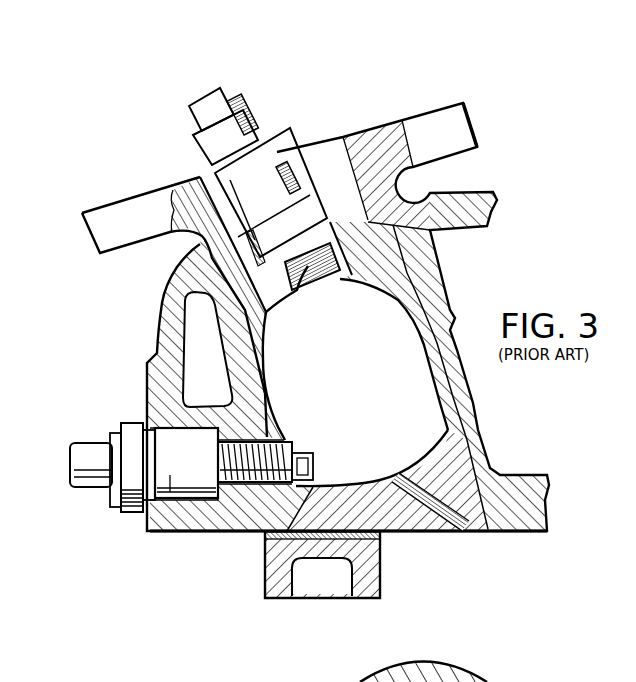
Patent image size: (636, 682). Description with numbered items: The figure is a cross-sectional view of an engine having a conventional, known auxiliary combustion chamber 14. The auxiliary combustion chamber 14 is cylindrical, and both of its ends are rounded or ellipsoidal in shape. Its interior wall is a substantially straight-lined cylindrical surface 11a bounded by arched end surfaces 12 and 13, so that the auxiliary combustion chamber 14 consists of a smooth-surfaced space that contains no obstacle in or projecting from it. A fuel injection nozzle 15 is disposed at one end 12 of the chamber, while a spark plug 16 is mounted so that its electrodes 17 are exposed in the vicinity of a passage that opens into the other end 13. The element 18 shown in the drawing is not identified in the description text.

The cylindrical surface 11a is at (418, 348).
The arched end surface 12 is at (353, 280).
The arched end surface 13 is at (402, 468).
The auxiliary combustion chamber 14 is at (352, 399).
The fuel injection nozzle 15 is at (306, 216).
The spark plug 16 is at (172, 505).
The electrodes 17 is at (303, 464).
The piston 18 is at (406, 517).